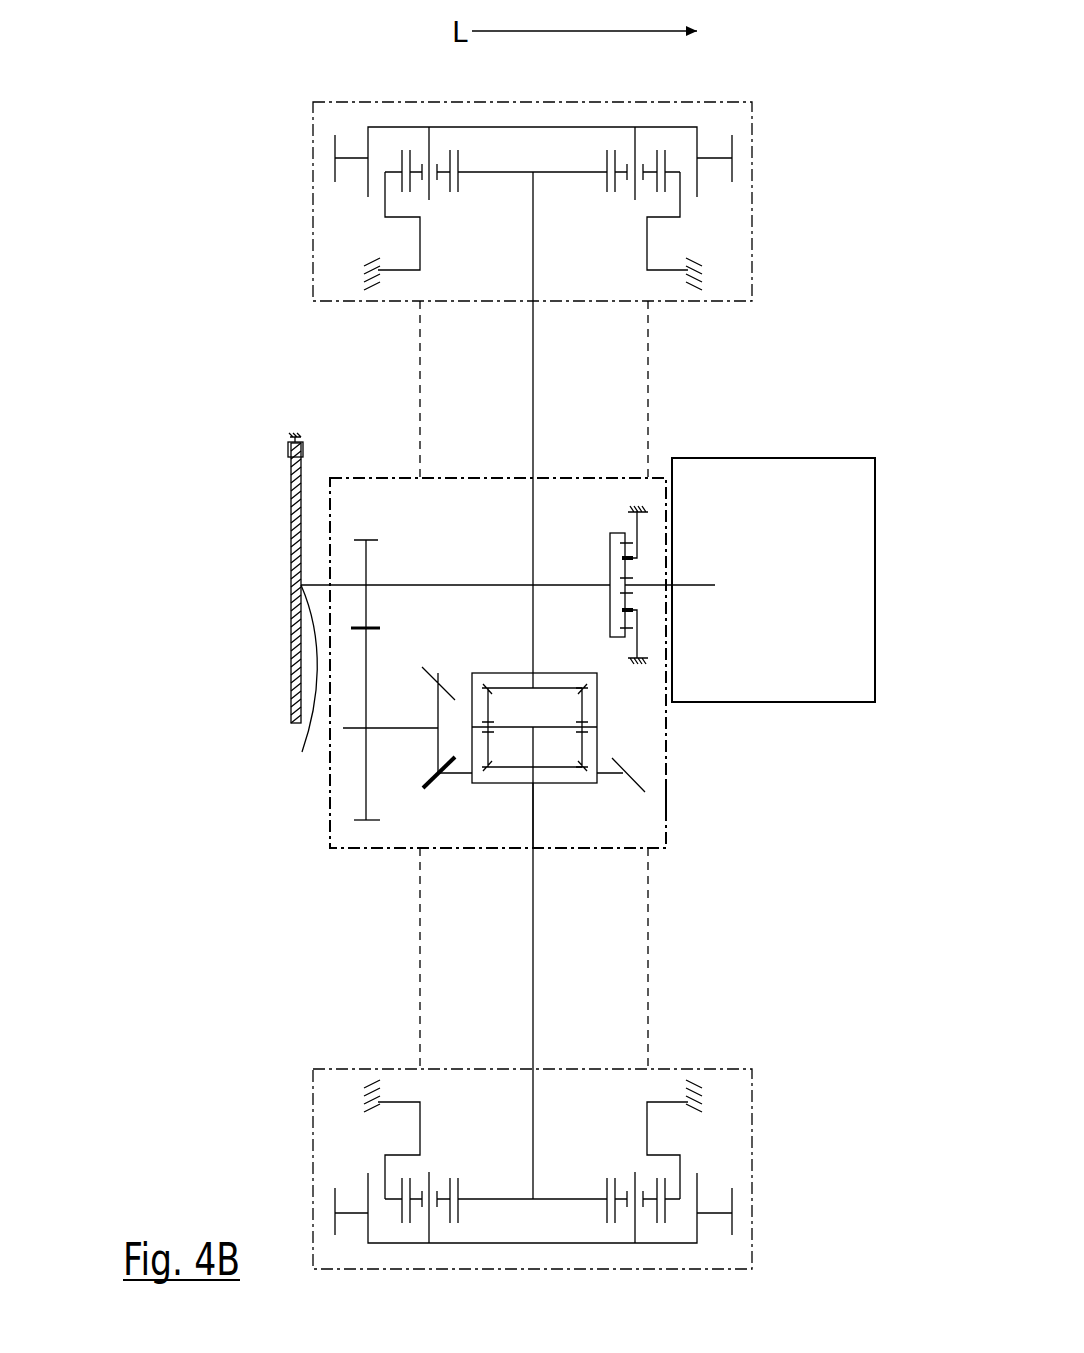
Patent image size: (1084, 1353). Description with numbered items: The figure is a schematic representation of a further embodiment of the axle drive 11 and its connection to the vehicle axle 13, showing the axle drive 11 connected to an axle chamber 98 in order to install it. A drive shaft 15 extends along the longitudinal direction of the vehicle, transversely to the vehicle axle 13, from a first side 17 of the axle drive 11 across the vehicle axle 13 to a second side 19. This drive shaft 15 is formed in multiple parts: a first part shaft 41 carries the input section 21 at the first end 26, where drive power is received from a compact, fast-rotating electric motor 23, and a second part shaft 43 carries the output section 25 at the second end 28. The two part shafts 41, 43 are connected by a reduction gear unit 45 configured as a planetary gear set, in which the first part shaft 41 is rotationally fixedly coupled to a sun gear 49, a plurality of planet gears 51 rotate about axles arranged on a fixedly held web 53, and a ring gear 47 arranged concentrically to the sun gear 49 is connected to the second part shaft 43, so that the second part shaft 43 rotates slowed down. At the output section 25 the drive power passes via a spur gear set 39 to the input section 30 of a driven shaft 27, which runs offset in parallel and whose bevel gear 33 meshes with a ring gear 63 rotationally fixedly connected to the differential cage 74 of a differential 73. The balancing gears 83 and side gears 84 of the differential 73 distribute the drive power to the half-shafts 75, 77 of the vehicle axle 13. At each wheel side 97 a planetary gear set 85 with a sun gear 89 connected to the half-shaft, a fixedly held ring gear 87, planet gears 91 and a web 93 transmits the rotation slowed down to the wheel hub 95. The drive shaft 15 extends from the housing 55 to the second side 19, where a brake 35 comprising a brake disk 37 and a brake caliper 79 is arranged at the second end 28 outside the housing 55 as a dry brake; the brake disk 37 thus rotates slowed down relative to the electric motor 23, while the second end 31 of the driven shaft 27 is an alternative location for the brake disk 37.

The axle drive 11 is at (230, 417).
The vehicle axle 13 is at (533, 345).
The drive shaft 15 is at (470, 585).
The first side 17 is at (660, 462).
The second side 19 is at (330, 445).
The input section 21 is at (739, 623).
The electric motor 23 is at (792, 602).
The output section 25 is at (366, 585).
The first end 26 is at (672, 588).
The driven shaft 27 is at (405, 728).
The second end 28 is at (296, 686).
The input section 30 is at (366, 728).
The second end 31 is at (343, 728).
The bevel gear 33 is at (450, 660).
The brake 35 is at (238, 610).
The brake disk 37 is at (290, 677).
The spur gear set 39 is at (342, 622).
The first part shaft 41 is at (648, 588).
The second part shaft 43 is at (598, 583).
The reduction gear unit 45 is at (648, 560).
The ring gear 47 is at (630, 630).
The sun gear 49 is at (685, 585).
The planet gears 51 is at (622, 545).
The web 53 is at (630, 542).
The housing 55 is at (666, 797).
The ring gear 63 is at (438, 780).
The differential 73 is at (560, 648).
The differential cage 74 is at (505, 785).
The half-shaft 75 is at (533, 830).
The half-shaft 77 is at (537, 668).
The brake caliper 79 is at (288, 455).
The balancing gears 83 is at (488, 712).
The side gears 84 is at (552, 692).
The planetary gear set 85 is at (550, 100).
The ring gear 87 is at (665, 158).
The sun gear 89 is at (606, 168).
The planet gears 91 is at (408, 168).
The web 93 is at (388, 127).
The wheel hub 95 is at (335, 153).
The wheel sides 97 is at (752, 228).
The axle chamber 98 is at (648, 380).